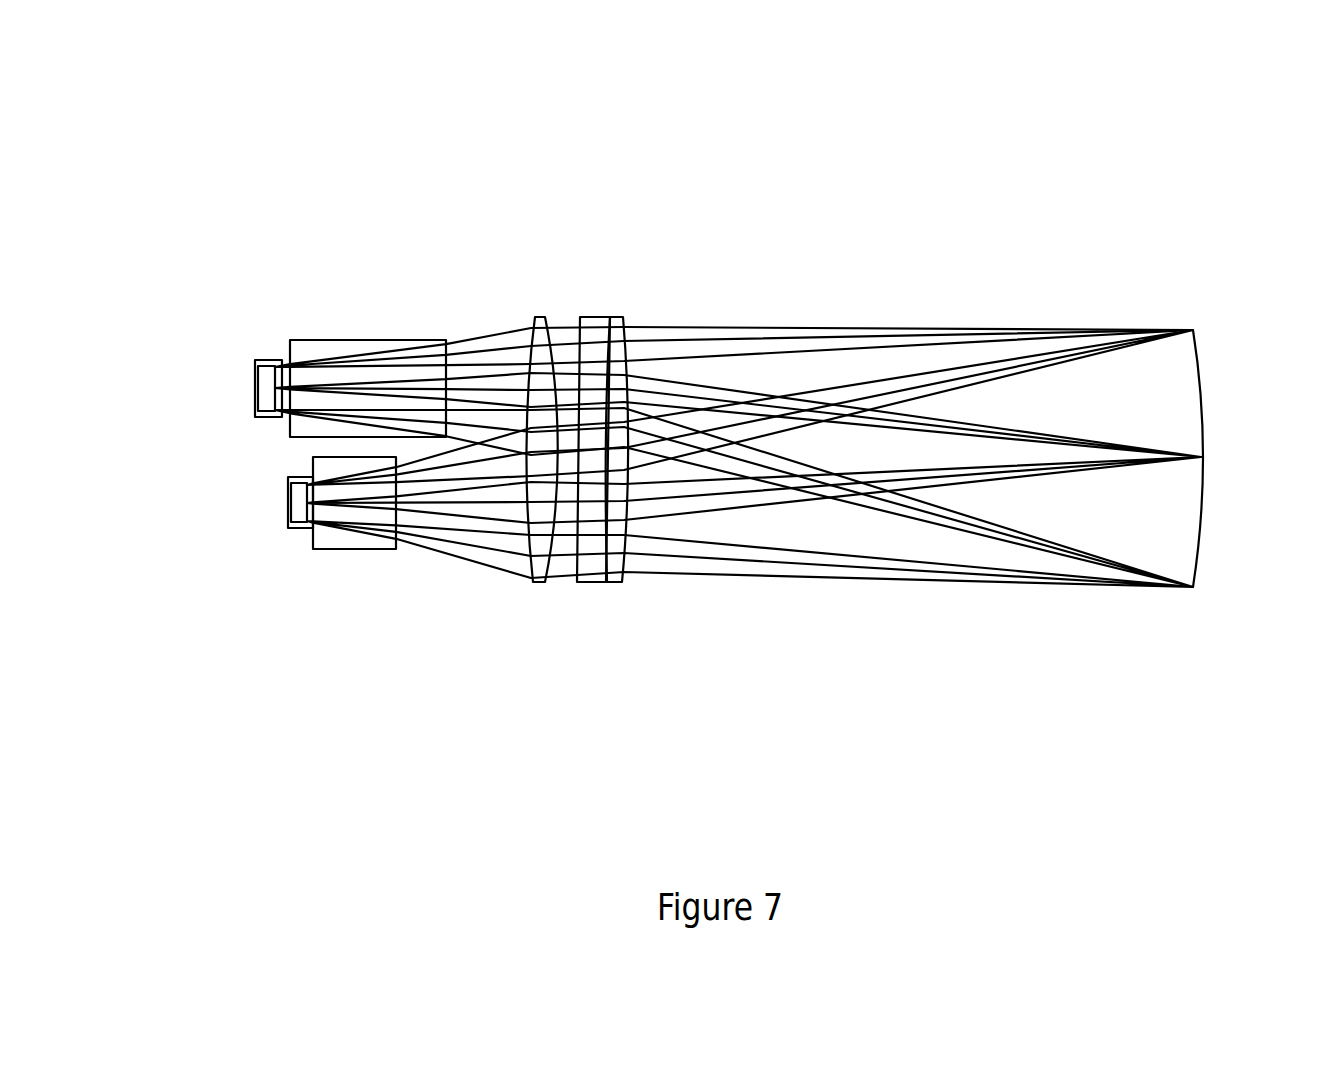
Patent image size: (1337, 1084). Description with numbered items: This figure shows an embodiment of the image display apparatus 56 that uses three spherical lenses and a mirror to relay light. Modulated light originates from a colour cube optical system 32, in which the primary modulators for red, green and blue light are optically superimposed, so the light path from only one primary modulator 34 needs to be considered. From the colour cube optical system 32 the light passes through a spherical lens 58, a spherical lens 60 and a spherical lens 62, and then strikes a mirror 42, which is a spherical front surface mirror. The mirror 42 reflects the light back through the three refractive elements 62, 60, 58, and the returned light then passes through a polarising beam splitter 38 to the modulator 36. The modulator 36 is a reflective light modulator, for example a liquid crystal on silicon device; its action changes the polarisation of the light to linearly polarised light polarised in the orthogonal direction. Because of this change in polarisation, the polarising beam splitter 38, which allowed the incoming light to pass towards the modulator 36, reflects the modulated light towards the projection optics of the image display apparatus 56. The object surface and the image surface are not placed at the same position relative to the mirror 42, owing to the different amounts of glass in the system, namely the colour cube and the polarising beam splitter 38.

The image display apparatus 56 is at (395, 172).
The colour cube optical system 32 is at (365, 340).
The primary modulator 34 is at (255, 386).
The modulator 36 is at (288, 493).
The polarising beam splitter 38 is at (365, 549).
The spherical lens 58 is at (538, 317).
The spherical lens 60 is at (598, 317).
The spherical lens 62 is at (624, 317).
The mirror 42 is at (1203, 437).